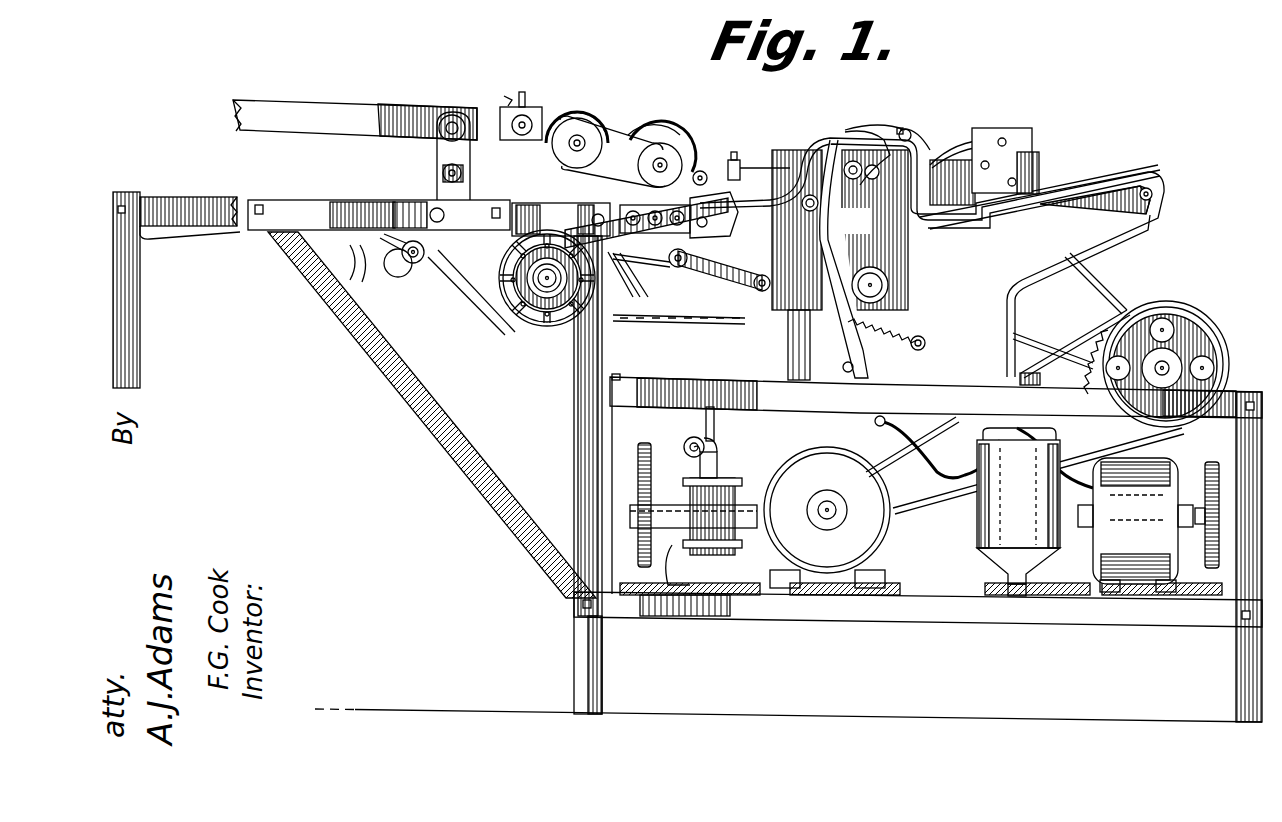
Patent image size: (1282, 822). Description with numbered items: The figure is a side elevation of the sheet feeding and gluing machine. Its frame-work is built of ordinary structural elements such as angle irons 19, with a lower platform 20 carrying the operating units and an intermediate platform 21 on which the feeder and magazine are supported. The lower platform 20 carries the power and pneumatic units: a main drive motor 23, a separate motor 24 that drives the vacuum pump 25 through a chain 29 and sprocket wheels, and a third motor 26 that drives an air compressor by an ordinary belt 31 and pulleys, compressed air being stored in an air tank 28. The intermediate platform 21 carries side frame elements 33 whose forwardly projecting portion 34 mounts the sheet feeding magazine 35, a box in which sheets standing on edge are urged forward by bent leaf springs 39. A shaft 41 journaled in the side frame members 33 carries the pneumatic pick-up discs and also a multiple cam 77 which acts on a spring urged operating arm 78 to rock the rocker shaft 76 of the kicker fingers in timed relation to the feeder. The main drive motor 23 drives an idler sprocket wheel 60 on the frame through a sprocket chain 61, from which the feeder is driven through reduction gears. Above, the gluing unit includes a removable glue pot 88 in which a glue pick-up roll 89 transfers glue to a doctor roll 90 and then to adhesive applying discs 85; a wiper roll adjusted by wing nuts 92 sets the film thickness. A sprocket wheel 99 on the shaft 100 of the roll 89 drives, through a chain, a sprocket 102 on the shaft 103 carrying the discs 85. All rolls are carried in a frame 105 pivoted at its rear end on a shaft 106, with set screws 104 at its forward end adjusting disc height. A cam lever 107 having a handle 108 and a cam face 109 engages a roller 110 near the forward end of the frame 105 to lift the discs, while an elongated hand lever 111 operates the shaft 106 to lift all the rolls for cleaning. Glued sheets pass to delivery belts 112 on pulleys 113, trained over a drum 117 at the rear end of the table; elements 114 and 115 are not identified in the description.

The angle irons 19 is at (138, 360).
The lower platform 20 is at (905, 602).
The intermediate platform 21 is at (812, 402).
The main drive motor 23 is at (885, 548).
The motor 24 is at (656, 596).
The vacuum pump 25 is at (720, 495).
The third motor 26 is at (1120, 522).
The air tank 28 is at (992, 528).
The chain 29 is at (662, 432).
The belt 31 is at (1212, 462).
The side frame elements 33 is at (990, 306).
The forwardly projecting portion 34 is at (1112, 228).
The sheet feeding magazine 35 is at (1040, 152).
The bent leaf springs 39 is at (950, 150).
The shaft 41 is at (950, 216).
The idler sprocket wheel 60 is at (1192, 340).
The sprocket chain 61 is at (919, 503).
The rocker shaft 76 is at (843, 367).
The multiple cam 77 is at (874, 220).
The spring urged operating arm 78 is at (824, 247).
The adhesive applying rollers or discs 85 is at (692, 150).
The glue pot 88 is at (640, 126).
The glue pick-up roll 89 is at (602, 132).
The doctor roll 90 is at (660, 145).
The wing nuts 92 is at (536, 98).
The sprocket wheel 99 is at (577, 125).
The shaft 100 is at (572, 140).
The sprocket 102 is at (684, 132).
The shaft 103 is at (704, 172).
The set screws 104 is at (745, 166).
The frame 105 is at (488, 106).
The shaft 106 is at (448, 112).
The cam lever 107 is at (643, 272).
The handle 108 is at (566, 346).
The cam face 109 is at (713, 213).
The roller 110 is at (752, 165).
The hand lever 111 is at (333, 118).
The delivery belts 112 is at (395, 266).
The pulleys 113 is at (460, 280).
The wheel 114 is at (520, 326).
The chain 115 is at (682, 325).
The drum 117 is at (160, 231).